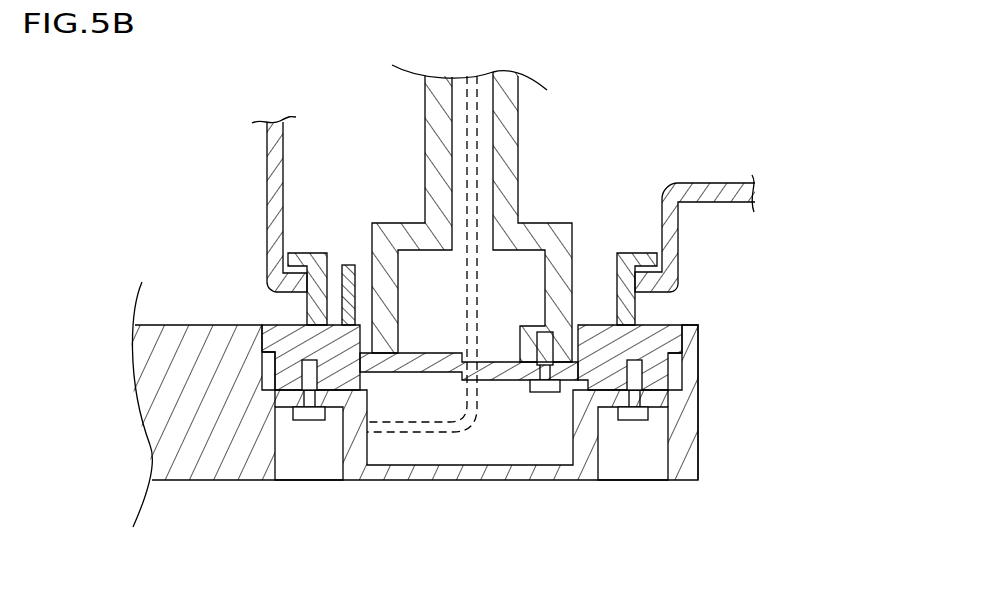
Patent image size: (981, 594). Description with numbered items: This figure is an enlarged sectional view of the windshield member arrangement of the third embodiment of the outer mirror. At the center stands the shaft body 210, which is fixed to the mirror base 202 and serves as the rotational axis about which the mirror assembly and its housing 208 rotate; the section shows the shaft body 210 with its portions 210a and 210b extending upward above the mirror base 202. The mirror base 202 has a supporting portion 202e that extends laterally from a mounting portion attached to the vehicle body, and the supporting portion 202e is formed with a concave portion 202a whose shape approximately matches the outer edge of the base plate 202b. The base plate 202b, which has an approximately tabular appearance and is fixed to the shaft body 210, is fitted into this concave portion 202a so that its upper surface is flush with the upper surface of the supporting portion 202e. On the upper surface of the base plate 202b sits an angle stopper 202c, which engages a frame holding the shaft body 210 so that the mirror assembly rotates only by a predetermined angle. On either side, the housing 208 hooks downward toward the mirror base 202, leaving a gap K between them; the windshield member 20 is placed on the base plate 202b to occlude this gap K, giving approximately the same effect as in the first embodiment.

The windshield member 20 is at (626, 253).
The mirror base 202 is at (479, 404).
The concave portion 202a is at (676, 366).
The base plate 202b is at (660, 324).
The angle stopper 202c is at (347, 263).
The supporting portion 202e is at (700, 412).
The housing 208 is at (265, 157).
The shaft body 210 is at (522, 248).
The shaft 210a is at (521, 96).
The housing 210b is at (547, 223).
The gap K is at (262, 310).